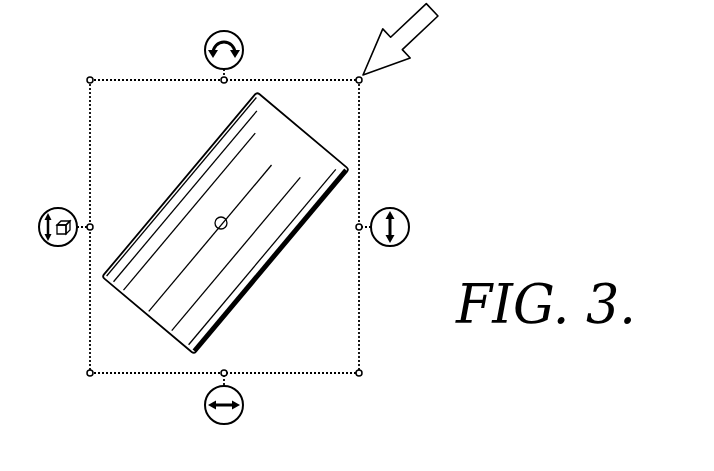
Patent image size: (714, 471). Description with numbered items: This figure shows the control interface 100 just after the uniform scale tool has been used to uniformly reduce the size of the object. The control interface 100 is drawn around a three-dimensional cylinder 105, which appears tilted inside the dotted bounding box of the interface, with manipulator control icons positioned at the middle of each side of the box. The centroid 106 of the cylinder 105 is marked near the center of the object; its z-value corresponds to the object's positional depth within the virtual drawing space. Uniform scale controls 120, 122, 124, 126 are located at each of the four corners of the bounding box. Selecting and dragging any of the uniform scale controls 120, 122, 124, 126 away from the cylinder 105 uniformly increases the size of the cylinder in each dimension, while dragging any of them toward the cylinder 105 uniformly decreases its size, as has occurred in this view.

The control interface 100 is at (263, 212).
The three-dimensional cylinder 105 is at (259, 277).
The centroid 106 is at (226, 218).
The uniform scale control 120 is at (359, 77).
The uniform scale control 122 is at (359, 376).
The uniform scale control 124 is at (90, 376).
The uniform scale control 126 is at (90, 77).